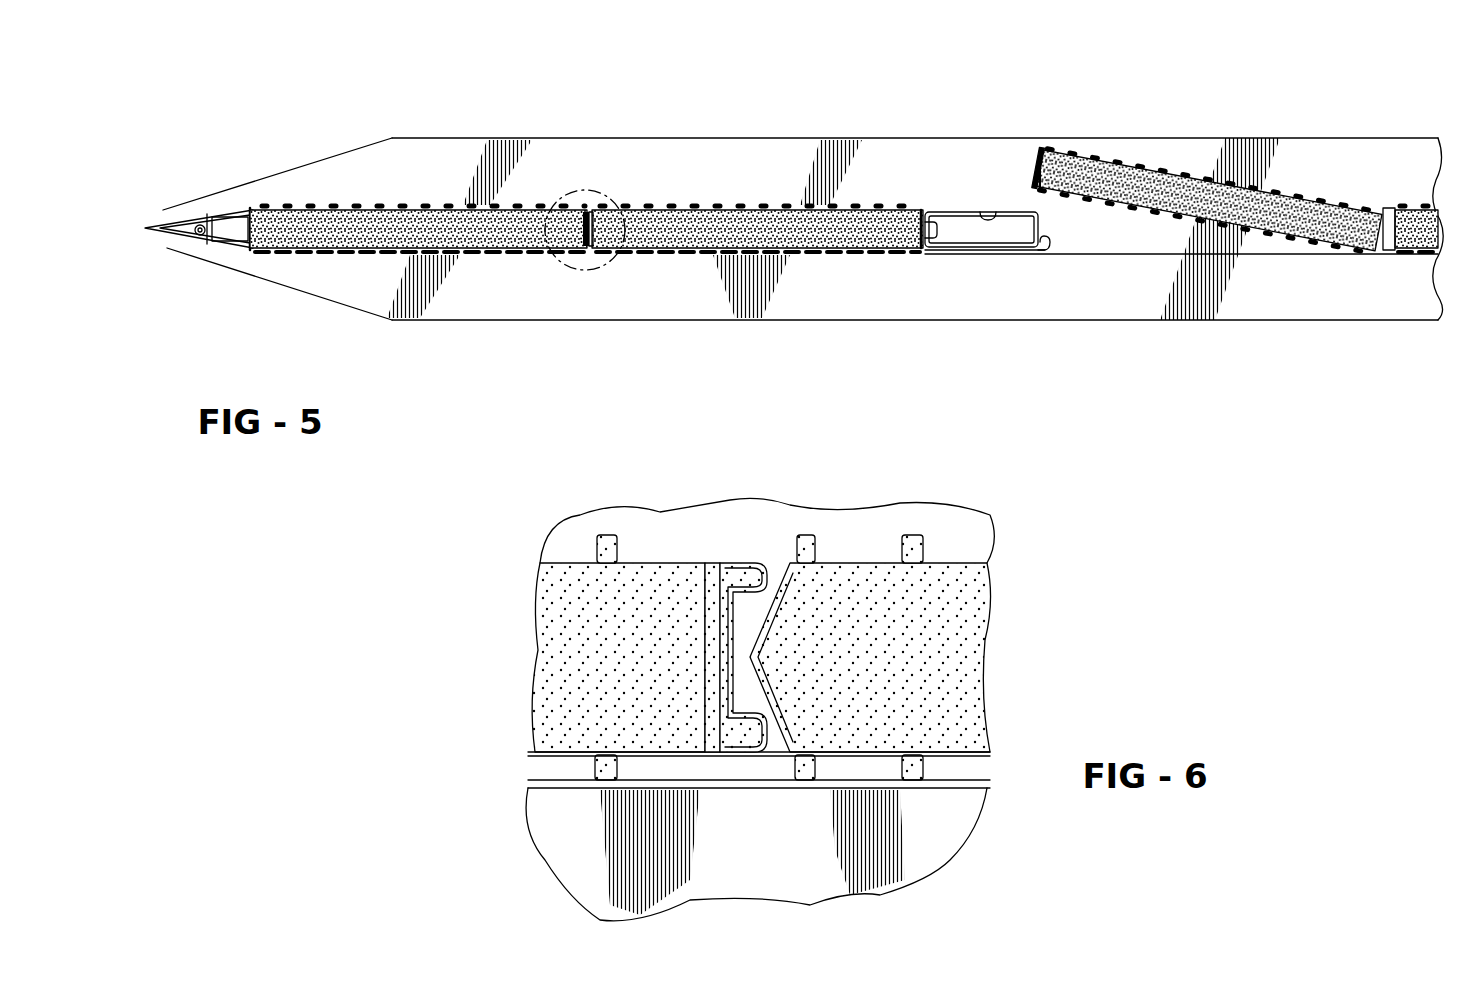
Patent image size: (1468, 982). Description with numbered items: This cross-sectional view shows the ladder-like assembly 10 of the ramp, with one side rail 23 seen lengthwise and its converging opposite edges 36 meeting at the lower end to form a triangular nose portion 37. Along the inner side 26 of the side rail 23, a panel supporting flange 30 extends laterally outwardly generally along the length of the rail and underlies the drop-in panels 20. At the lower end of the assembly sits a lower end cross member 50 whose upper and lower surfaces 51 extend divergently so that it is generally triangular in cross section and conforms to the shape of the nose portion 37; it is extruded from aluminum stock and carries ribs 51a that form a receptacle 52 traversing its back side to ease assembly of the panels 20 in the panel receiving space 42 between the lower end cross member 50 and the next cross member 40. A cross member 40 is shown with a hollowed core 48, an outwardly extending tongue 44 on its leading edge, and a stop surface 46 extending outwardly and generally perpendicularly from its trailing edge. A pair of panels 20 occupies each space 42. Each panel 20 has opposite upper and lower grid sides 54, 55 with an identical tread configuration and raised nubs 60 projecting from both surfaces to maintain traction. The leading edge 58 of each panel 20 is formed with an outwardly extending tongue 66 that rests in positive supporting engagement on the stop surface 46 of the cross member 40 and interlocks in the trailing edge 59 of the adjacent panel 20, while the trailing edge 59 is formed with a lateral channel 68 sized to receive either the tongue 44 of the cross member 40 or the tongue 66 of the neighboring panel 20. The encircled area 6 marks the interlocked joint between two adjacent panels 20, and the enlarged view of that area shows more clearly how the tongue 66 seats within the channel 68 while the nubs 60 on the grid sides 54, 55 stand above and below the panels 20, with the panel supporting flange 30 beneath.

In FIG. 5, the encircled area 6 is at (612, 270).
In FIG. 5, the ladder-like assembly 10 is at (912, 82).
In FIG. 5, the panel 20 is at (418, 208).
In FIG. 6, the panel 20 is at (640, 563).
In FIG. 5, the side rail 23 is at (505, 150).
In FIG. 6, the side rail 23 is at (730, 507).
In FIG. 5, the inner side 26 is at (968, 160).
In FIG. 6, the inner side 26 is at (965, 525).
In FIG. 5, the panel supporting flange 30 is at (1105, 255).
In FIG. 6, the panel supporting flange 30 is at (660, 775).
In FIG. 5, the converging opposite edges 36 is at (315, 165).
In FIG. 5, the triangular nose portion 37 is at (283, 168).
In FIG. 5, the cross member 40 is at (985, 250).
In FIG. 5, the panel receiving space 42 is at (887, 80).
In FIG. 5, the tongue 44 is at (860, 253).
In FIG. 5, the stop surface 46 is at (1052, 240).
In FIG. 5, the hollowed core 48 is at (990, 212).
In FIG. 5, the lower end cross member 50 is at (210, 207).
In FIG. 5, the upper and lower surfaces 51 is at (160, 200).
In FIG. 5, the ribs 51a is at (253, 207).
In FIG. 5, the receptacle 52 is at (222, 215).
In FIG. 5, the upper grid side 54 is at (458, 208).
In FIG. 6, the upper grid side 54 is at (545, 563).
In FIG. 5, the lower grid side 55 is at (468, 255).
In FIG. 6, the lower grid side 55 is at (540, 758).
In FIG. 5, the leading edge 58 is at (594, 218).
In FIG. 6, the leading edge 58 is at (770, 745).
In FIG. 5, the trailing edge 59 is at (932, 212).
In FIG. 6, the trailing edge 59 is at (760, 565).
In FIG. 6, the nubs 60 is at (607, 535).
In FIG. 5, the tongue 66 is at (248, 245).
In FIG. 6, the tongue 66 is at (718, 650).
In FIG. 5, the channel 68 is at (580, 215).
In FIG. 6, the channel 68 is at (735, 720).